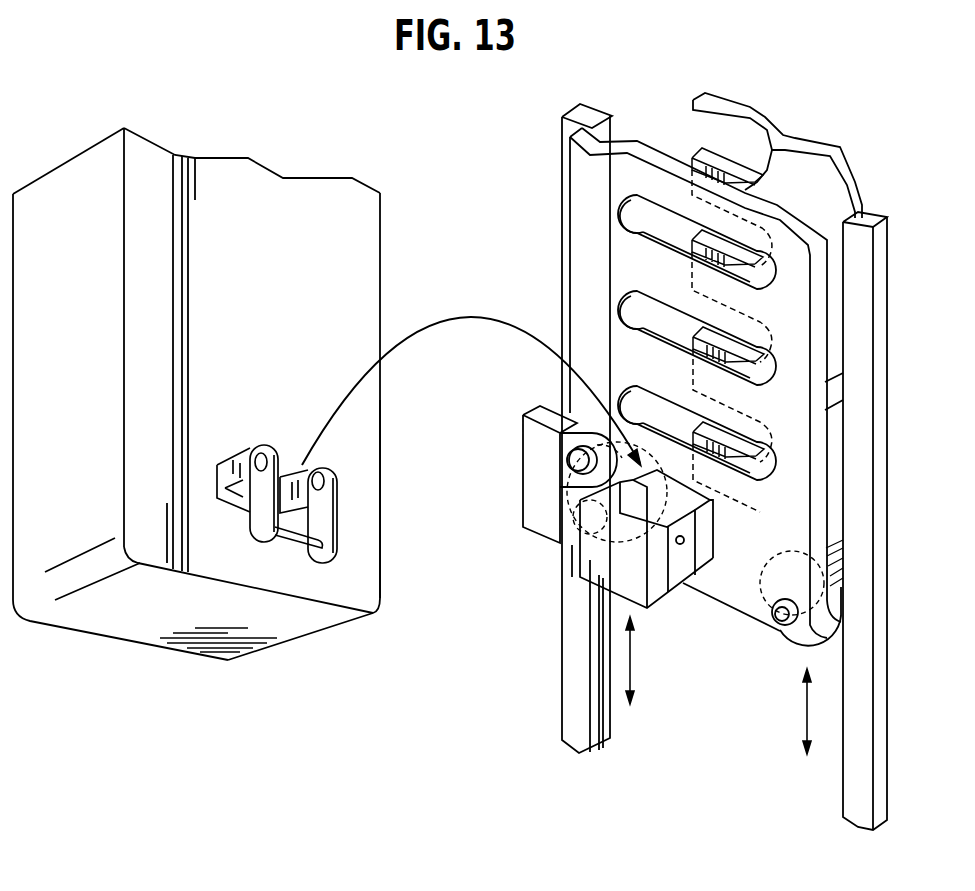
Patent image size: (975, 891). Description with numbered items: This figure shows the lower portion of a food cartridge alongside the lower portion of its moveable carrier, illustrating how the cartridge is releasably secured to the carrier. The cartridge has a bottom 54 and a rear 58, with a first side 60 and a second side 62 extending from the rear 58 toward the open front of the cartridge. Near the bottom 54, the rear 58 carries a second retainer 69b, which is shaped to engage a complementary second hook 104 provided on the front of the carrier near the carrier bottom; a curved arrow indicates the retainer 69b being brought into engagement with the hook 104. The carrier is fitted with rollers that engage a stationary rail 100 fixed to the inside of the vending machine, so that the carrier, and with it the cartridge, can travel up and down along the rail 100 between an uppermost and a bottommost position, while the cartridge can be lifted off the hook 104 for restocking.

The bottom 54 is at (222, 398).
The rear 58 is at (252, 394).
The first side 60 is at (120, 394).
The second side 62 is at (380, 537).
The second retainer 69b is at (294, 545).
The rail 100 is at (857, 290).
The second hook 104 is at (633, 583).